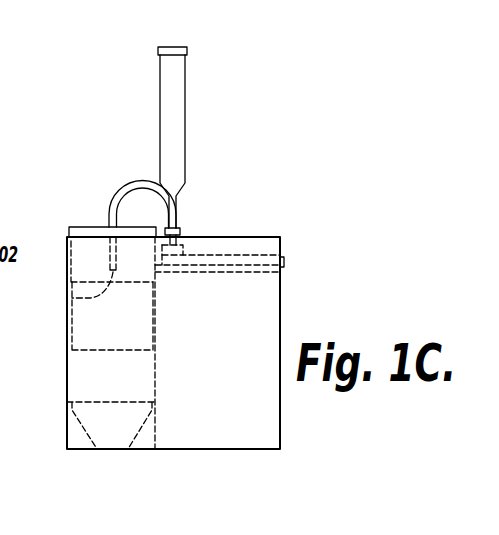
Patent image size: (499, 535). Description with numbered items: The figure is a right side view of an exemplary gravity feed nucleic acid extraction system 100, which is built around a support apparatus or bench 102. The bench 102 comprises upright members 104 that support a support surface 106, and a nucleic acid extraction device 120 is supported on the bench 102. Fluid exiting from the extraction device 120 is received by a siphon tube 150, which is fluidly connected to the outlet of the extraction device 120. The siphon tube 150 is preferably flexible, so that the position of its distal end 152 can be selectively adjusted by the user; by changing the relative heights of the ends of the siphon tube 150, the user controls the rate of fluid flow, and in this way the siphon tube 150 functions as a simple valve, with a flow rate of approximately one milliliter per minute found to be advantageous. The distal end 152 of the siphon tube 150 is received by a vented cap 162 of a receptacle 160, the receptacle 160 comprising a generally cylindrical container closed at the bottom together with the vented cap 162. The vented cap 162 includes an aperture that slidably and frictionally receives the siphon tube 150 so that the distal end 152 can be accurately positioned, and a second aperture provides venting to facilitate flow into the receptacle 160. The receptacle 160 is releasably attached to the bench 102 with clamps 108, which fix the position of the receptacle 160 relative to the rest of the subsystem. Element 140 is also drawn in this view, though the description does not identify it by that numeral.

The gravity feed nucleic acid extraction system 100 is at (279, 149).
The bench 102 is at (286, 437).
The upright members 104 is at (270, 308).
The support surface 106 is at (242, 272).
The clamps 108 is at (70, 386).
The nucleic acid extraction device 120 is at (283, 257).
The syringe 140 is at (192, 107).
The siphon tube 150 is at (139, 183).
The distal end 152 is at (67, 298).
The receptacle 160 is at (63, 348).
The vented cap 162 is at (97, 227).